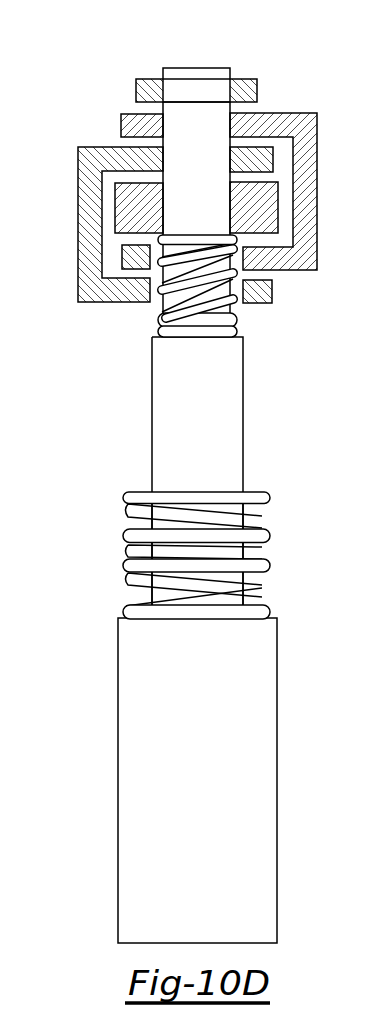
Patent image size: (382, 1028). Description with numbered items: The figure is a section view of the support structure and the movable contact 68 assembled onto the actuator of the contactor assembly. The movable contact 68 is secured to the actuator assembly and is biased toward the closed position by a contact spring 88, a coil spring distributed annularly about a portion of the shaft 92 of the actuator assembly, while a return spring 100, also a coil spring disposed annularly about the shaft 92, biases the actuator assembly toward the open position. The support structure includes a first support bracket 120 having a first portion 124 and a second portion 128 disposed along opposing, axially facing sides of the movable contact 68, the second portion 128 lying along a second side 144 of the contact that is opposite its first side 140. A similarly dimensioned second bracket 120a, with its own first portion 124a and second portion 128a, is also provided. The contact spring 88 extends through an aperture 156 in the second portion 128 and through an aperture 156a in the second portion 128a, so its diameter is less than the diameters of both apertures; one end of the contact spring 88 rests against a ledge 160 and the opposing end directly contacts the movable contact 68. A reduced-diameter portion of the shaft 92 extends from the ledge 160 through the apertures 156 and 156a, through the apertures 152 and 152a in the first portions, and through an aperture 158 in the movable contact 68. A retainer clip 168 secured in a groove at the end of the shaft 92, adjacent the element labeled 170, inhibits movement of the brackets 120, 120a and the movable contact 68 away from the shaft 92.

The movable contact 68 is at (280, 222).
The contact spring 88 is at (197, 330).
The shaft 92 is at (152, 430).
The return spring 100 is at (123, 537).
The first support bracket 120 is at (317, 182).
The second bracket 120a is at (78, 183).
The first portion 124 is at (280, 113).
The first portion of second bracket 124a is at (107, 147).
The second portion 128 is at (307, 272).
The second portion of second bracket 128a is at (88, 303).
The first side 140 is at (273, 170).
The second side 144 is at (298, 247).
The aperture 152 is at (232, 123).
The aperture 152a is at (165, 126).
The aperture 156 is at (237, 268).
The aperture 156a is at (153, 305).
The aperture 158 is at (160, 215).
The ledge 160 is at (240, 334).
The retainer clip 168 is at (136, 90).
The cap boss 170 is at (197, 93).